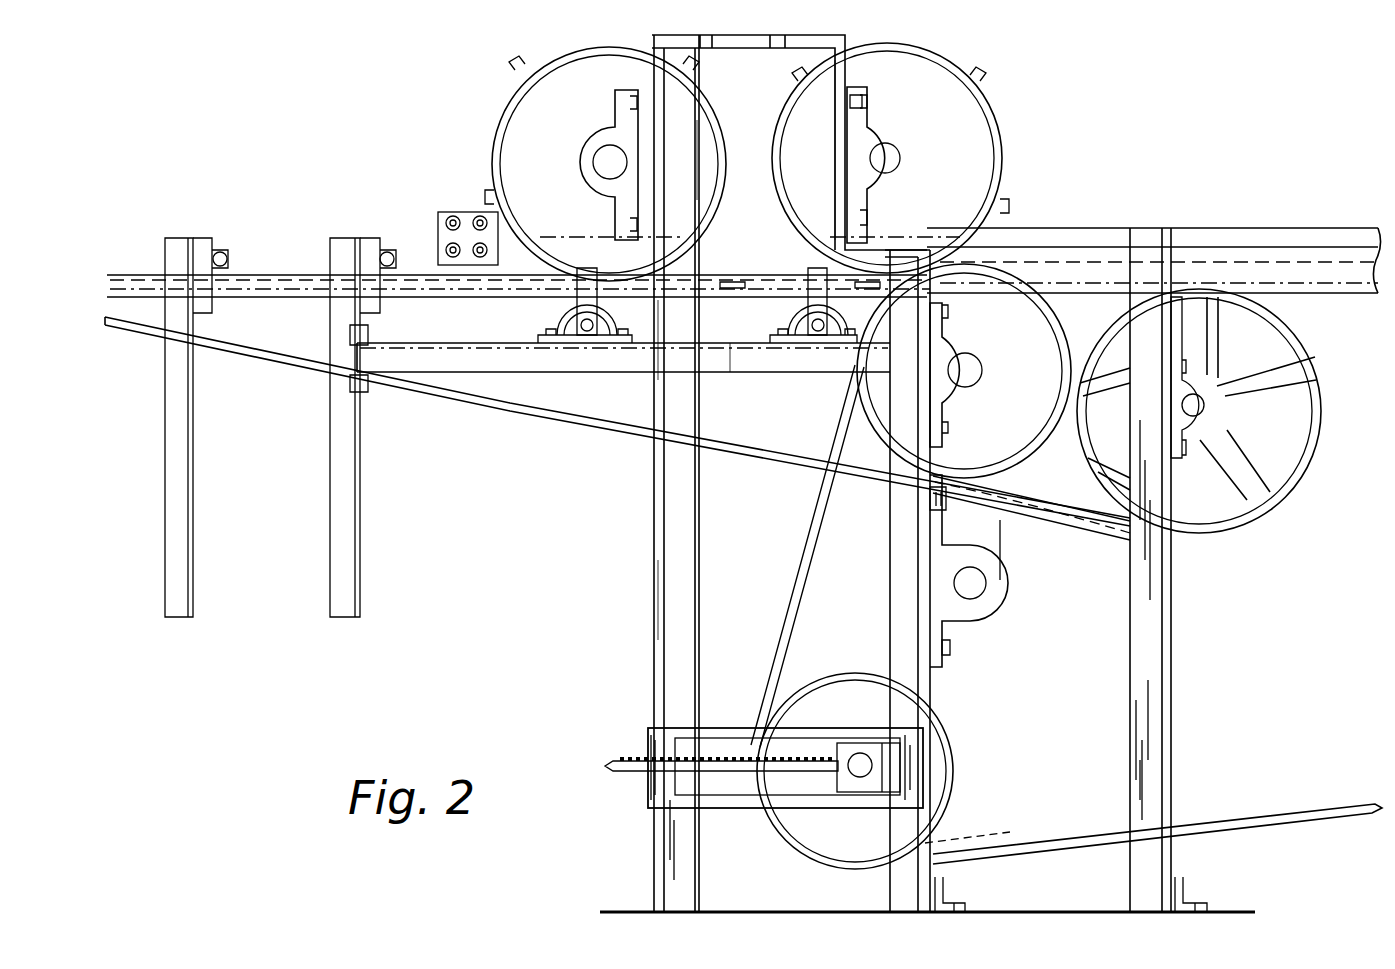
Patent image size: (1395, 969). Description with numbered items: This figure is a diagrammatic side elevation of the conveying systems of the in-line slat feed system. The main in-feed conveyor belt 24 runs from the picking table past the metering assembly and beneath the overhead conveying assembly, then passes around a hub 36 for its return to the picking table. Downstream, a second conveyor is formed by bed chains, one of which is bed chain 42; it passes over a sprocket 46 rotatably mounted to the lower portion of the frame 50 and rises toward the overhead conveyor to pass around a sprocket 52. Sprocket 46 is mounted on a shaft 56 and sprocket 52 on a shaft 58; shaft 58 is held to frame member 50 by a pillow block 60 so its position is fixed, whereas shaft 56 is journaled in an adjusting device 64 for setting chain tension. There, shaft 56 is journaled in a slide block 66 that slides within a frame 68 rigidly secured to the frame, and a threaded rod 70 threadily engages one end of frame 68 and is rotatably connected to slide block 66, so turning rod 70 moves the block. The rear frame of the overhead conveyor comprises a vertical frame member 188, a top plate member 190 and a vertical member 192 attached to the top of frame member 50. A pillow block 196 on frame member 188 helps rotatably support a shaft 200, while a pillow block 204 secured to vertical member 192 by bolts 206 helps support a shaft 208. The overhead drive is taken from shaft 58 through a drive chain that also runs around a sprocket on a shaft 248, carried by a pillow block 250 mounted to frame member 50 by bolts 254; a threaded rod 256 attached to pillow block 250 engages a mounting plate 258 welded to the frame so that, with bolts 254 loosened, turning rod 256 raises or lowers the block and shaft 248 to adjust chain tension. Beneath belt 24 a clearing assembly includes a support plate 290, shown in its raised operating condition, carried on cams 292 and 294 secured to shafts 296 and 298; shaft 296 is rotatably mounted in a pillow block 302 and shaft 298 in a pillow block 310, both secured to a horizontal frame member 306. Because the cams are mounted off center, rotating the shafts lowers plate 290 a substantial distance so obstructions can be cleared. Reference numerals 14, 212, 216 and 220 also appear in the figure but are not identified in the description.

The support beam 14 is at (1268, 222).
The main in-feed conveyor belt 24 is at (262, 274).
The hub 36 is at (1286, 474).
The bed chain 42 is at (805, 570).
The sprocket 46 is at (858, 838).
The frame member 50 is at (888, 537).
The sprocket 52 is at (1007, 432).
The shaft 56 is at (853, 755).
The shaft 58 is at (970, 366).
The pillow block 60 is at (1000, 365).
The adjusting device 64 is at (645, 716).
The slide block 66 is at (870, 775).
The frame 68 is at (722, 730).
The threaded rod 70 is at (727, 780).
The vertical frame member 188 is at (690, 547).
The top plate member 190 is at (790, 35).
The vertical member 192 is at (836, 163).
The pillow block 196 is at (598, 135).
The shaft 200 is at (597, 165).
The pillow block 204 is at (905, 130).
The bolts 206 is at (898, 88).
The shaft 208 is at (890, 156).
The wheel 212 is at (552, 150).
The wheel 216 is at (966, 198).
The wheel rim 220 is at (1004, 164).
The shaft 248 is at (975, 584).
The pillow block 250 is at (975, 556).
The bolts 254 is at (955, 646).
The threaded rod 256 is at (1005, 478).
The mounting plate 258 is at (950, 505).
The support plate 290 is at (752, 293).
The cams 292 is at (562, 318).
The cams 294 is at (793, 325).
The shaft 296 is at (589, 335).
The horizontal shaft 298 is at (818, 345).
The pillow block 302 is at (640, 316).
The horizontal frame member 306 is at (518, 371).
The pillow block 310 is at (765, 348).